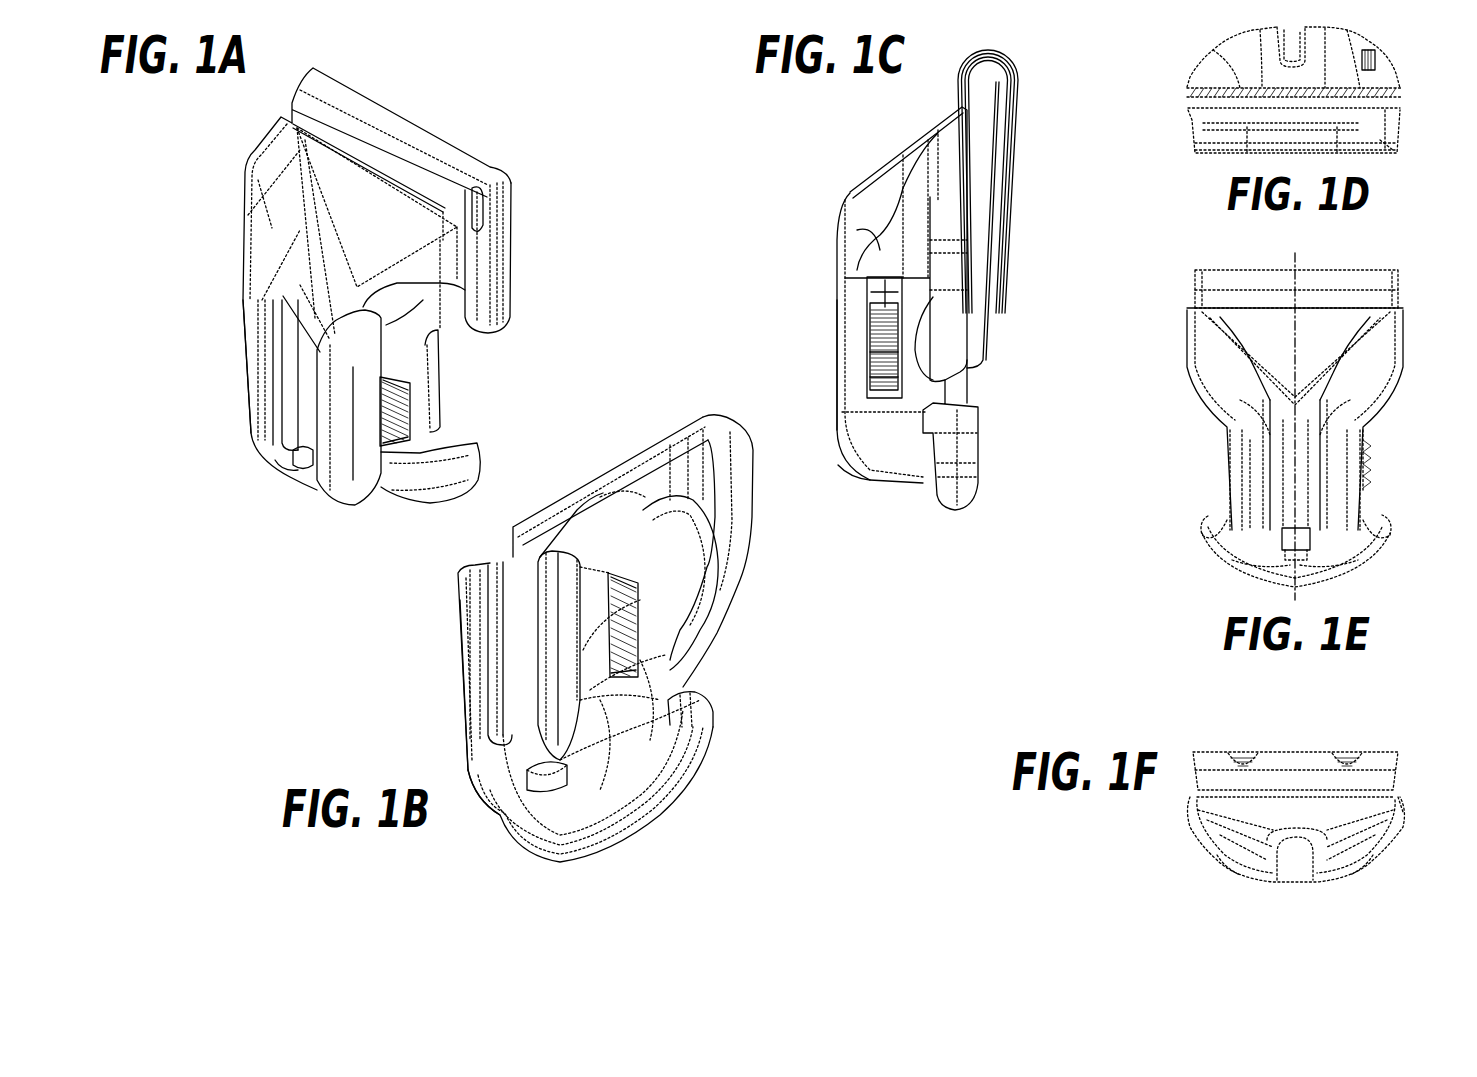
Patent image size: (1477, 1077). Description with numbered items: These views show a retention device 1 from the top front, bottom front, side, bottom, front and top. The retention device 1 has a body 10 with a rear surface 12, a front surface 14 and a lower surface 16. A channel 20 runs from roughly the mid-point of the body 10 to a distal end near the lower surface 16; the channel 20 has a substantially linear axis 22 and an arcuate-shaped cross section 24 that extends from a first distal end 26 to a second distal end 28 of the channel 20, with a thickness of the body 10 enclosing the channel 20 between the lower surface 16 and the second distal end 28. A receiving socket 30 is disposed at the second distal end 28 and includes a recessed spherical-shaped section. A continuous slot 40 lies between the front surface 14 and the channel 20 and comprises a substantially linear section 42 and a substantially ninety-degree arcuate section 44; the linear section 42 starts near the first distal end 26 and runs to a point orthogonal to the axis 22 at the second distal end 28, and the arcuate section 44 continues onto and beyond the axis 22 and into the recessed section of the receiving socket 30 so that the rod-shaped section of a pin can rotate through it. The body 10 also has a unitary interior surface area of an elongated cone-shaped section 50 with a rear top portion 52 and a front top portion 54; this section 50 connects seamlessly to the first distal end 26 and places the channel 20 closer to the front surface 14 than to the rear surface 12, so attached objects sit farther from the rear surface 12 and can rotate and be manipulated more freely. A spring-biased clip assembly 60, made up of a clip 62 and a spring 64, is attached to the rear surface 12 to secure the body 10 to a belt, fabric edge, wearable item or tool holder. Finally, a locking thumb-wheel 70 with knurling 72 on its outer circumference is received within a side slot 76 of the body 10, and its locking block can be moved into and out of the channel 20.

In FIG. 1A, the retention device 1 is at (220, 122).
In FIG. 1B, the retention device 1 is at (438, 561).
In FIG. 1C, the retention device 1 is at (850, 130).
In FIG. 1D, the retention device 1 is at (1174, 47).
In FIG. 1E, the retention device 1 is at (1173, 297).
In FIG. 1F, the retention device 1 is at (1256, 727).
In FIG. 1A, the body 10 is at (246, 210).
In FIG. 1B, the body 10 is at (468, 658).
In FIG. 1C, the body 10 is at (838, 230).
In FIG. 1D, the body 10 is at (1187, 85).
In FIG. 1E, the body 10 is at (1187, 372).
In FIG. 1F, the body 10 is at (1187, 815).
In FIG. 1A, the rear surface 12 is at (433, 370).
In FIG. 1B, the rear surface 12 is at (702, 702).
In FIG. 1C, the rear surface 12 is at (967, 390).
In FIG. 1D, the rear surface 12 is at (1387, 122).
In FIG. 1F, the rear surface 12 is at (1393, 797).
In FIG. 1A, the front surface 14 is at (252, 397).
In FIG. 1B, the front surface 14 is at (467, 730).
In FIG. 1C, the front surface 14 is at (833, 397).
In FIG. 1D, the front surface 14 is at (1348, 40).
In FIG. 1E, the front surface 14 is at (1263, 467).
In FIG. 1F, the front surface 14 is at (1225, 865).
In FIG. 1A, the lower surface 16 is at (290, 477).
In FIG. 1B, the lower surface 16 is at (515, 785).
In FIG. 1C, the lower surface 16 is at (868, 477).
In FIG. 1D, the lower surface 16 is at (1293, 77).
In FIG. 1E, the lower surface 16 is at (1290, 572).
In FIG. 1A, the channel 20 is at (310, 338).
In FIG. 1B, the channel 20 is at (530, 705).
In FIG. 1D, the channel 20 is at (1298, 45).
In FIG. 1E, the channel 20 is at (1287, 475).
In FIG. 1F, the channel 20 is at (1297, 855).
In FIG. 1E, the substantially linear axis 22 is at (1300, 258).
In FIG. 1D, the arcuate-shaped cross section 24 is at (1307, 65).
In FIG. 1F, the arcuate-shaped cross section 24 is at (1305, 842).
In FIG. 1A, the first distal end 26 is at (317, 330).
In FIG. 1E, the first distal end 26 is at (1310, 428).
In FIG. 1E, the second distal end 28 is at (1308, 540).
In FIG. 1A, the receiving socket 30 is at (310, 447).
In FIG. 1B, the receiving socket 30 is at (543, 760).
In FIG. 1E, the receiving socket 30 is at (1300, 533).
In FIG. 1A, the continuous slot 40 is at (295, 368).
In FIG. 1B, the continuous slot 40 is at (512, 652).
In FIG. 1E, the continuous slot 40 is at (1257, 438).
In FIG. 1A, the substantially linear section 42 is at (295, 393).
In FIG. 1A, the substantially 90-degree arcuate section 44 is at (295, 467).
In FIG. 1A, the elongated cone-shaped section 50 is at (377, 229).
In FIG. 1B, the elongated cone-shaped section 50 is at (535, 558).
In FIG. 1E, the elongated cone-shaped section 50 is at (1296, 358).
In FIG. 1F, the elongated cone-shaped section 50 is at (1295, 829).
In FIG. 1A, the rear top portion 52 is at (443, 213).
In FIG. 1E, the rear top portion 52 is at (1357, 308).
In FIG. 1F, the rear top portion 52 is at (1350, 797).
In FIG. 1A, the front top portion 54 is at (363, 307).
In FIG. 1B, the front top portion 54 is at (680, 583).
In FIG. 1E, the front top portion 54 is at (1347, 370).
In FIG. 1F, the front top portion 54 is at (1363, 862).
In FIG. 1A, the spring-biased clip assembly 60 is at (527, 153).
In FIG. 1B, the spring-biased clip assembly 60 is at (766, 559).
In FIG. 1C, the spring-biased clip assembly 60 is at (1041, 165).
In FIG. 1D, the spring-biased clip assembly 60 is at (1418, 152).
In FIG. 1E, the spring-biased clip assembly 60 is at (1414, 262).
In FIG. 1F, the spring-biased clip assembly 60 is at (1415, 731).
In FIG. 1A, the clip 62 is at (510, 252).
In FIG. 1B, the clip 62 is at (743, 526).
In FIG. 1C, the clip 62 is at (1010, 262).
In FIG. 1D, the clip 62 is at (1393, 142).
In FIG. 1E, the clip 62 is at (1227, 277).
In FIG. 1F, the clip 62 is at (1225, 762).
In FIG. 1C, the spring 64 is at (983, 338).
In FIG. 1D, the spring 64 is at (1290, 132).
In FIG. 1A, the locking thumb-wheel 70 is at (387, 417).
In FIG. 1B, the locking thumb-wheel 70 is at (632, 642).
In FIG. 1C, the locking thumb-wheel 70 is at (880, 323).
In FIG. 1D, the locking thumb-wheel 70 is at (1375, 60).
In FIG. 1E, the locking thumb-wheel 70 is at (1367, 473).
In FIG. 1A, the knurling 72 is at (403, 397).
In FIG. 1B, the knurling 72 is at (642, 618).
In FIG. 1C, the knurling 72 is at (880, 353).
In FIG. 1E, the knurling 72 is at (1368, 452).
In FIG. 1A, the side slot 76 is at (400, 440).
In FIG. 1B, the side slot 76 is at (627, 675).
In FIG. 1C, the side slot 76 is at (868, 377).